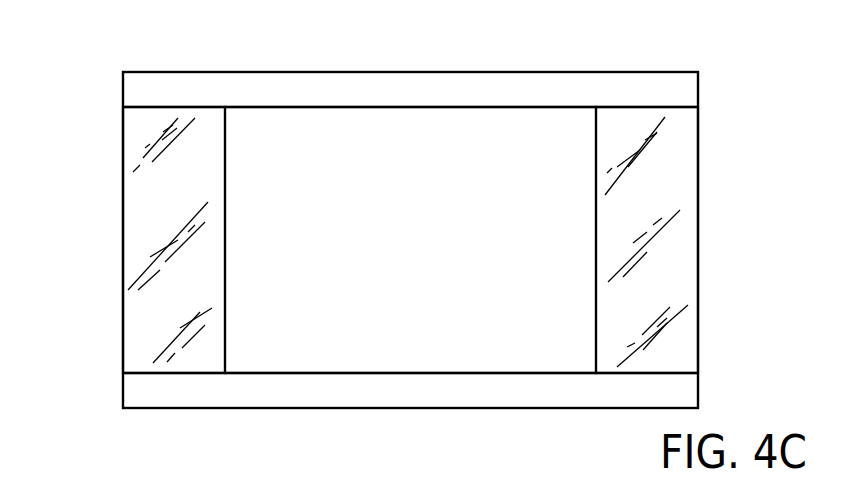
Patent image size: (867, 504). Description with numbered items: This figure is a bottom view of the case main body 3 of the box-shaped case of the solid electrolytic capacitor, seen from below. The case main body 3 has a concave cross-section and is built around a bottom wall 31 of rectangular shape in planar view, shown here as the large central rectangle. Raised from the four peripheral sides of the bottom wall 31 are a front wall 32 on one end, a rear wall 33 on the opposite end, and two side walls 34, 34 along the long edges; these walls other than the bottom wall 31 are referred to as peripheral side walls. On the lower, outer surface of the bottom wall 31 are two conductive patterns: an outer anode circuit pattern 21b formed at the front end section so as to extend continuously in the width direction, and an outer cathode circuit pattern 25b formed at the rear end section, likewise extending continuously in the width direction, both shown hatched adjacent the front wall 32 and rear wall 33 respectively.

The case main body 3 is at (675, 65).
The bottom wall 31 is at (455, 153).
The front wall 32 is at (123, 239).
The rear wall 33 is at (699, 259).
The side wall 34 is at (387, 72).
The outer anode circuit pattern 21b is at (193, 167).
The outer cathode circuit pattern 25b is at (615, 229).